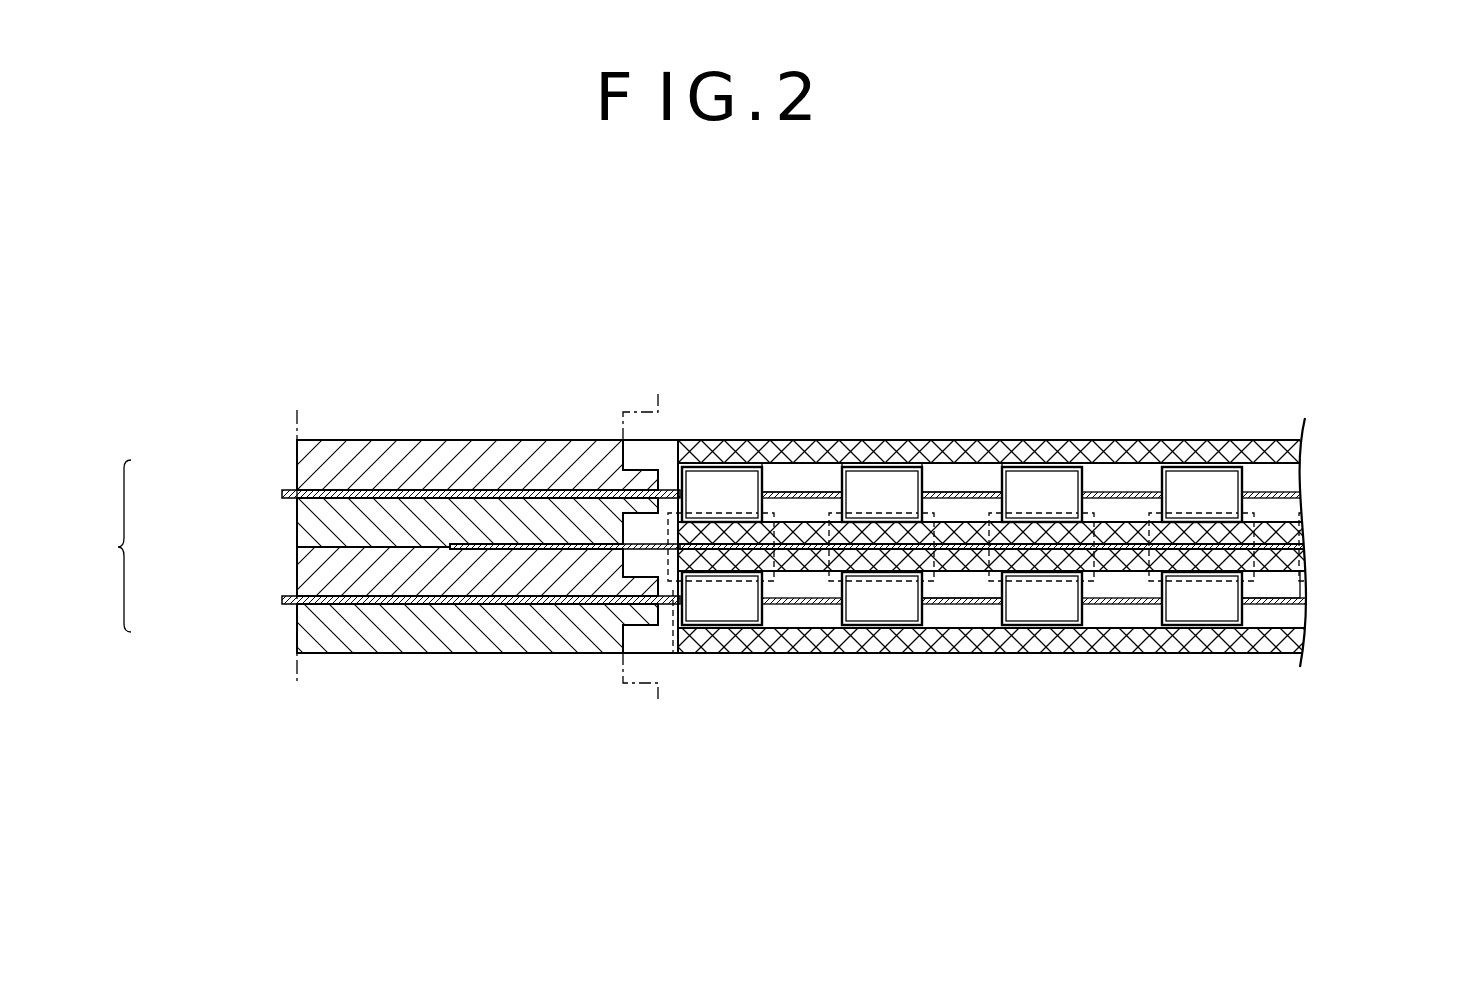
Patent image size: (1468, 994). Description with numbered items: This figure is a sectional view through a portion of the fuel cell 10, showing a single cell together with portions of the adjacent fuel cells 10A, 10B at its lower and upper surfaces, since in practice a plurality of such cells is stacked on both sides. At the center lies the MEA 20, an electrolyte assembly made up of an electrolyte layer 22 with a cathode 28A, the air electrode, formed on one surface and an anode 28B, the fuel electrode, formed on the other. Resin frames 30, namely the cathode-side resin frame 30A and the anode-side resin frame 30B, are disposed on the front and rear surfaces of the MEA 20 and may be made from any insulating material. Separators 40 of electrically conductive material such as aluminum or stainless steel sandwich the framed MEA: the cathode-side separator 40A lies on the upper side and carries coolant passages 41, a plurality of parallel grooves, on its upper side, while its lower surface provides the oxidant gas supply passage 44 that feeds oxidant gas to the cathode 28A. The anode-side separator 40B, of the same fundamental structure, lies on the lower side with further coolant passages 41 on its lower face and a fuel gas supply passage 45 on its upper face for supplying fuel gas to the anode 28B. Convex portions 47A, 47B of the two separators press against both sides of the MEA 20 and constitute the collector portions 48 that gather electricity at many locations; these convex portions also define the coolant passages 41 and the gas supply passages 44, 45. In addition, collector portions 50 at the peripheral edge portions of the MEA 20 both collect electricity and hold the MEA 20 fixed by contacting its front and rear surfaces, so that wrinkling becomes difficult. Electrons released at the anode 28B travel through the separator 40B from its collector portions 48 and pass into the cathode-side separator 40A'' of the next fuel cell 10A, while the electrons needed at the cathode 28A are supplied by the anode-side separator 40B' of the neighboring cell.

The fuel cell 10 is at (1315, 547).
The other fuel cell 10A is at (290, 656).
The other fuel cell 10B is at (290, 438).
The MEA 20 is at (812, 520).
The electrolyte layer 22 is at (659, 468).
The cathode 28A is at (1148, 512).
The anode 28B is at (1158, 605).
The resin frames 30 is at (219, 497).
The cathode-side resin frame 30A is at (312, 518).
The anode-side resin frame 30B is at (312, 576).
The separators 40 is at (109, 546).
The cathode-side separator 40A is at (773, 481).
The anode-side separator 40B is at (781, 603).
The anode-side separator of the next fuel cell 40B' is at (198, 447).
The cathode-side separator of the next fuel cell 40A'' is at (195, 647).
The coolant passages 41 is at (722, 488).
The oxidant gas supply passage 44 is at (962, 505).
The fuel gas supply passage 45 is at (962, 620).
The convex portions of the cathode-side separator 47A is at (789, 494).
The convex portions of the anode-side separator 47B is at (791, 606).
The collector portions 48 is at (1222, 505).
The collector portions at peripheral edge portions 50 is at (669, 600).